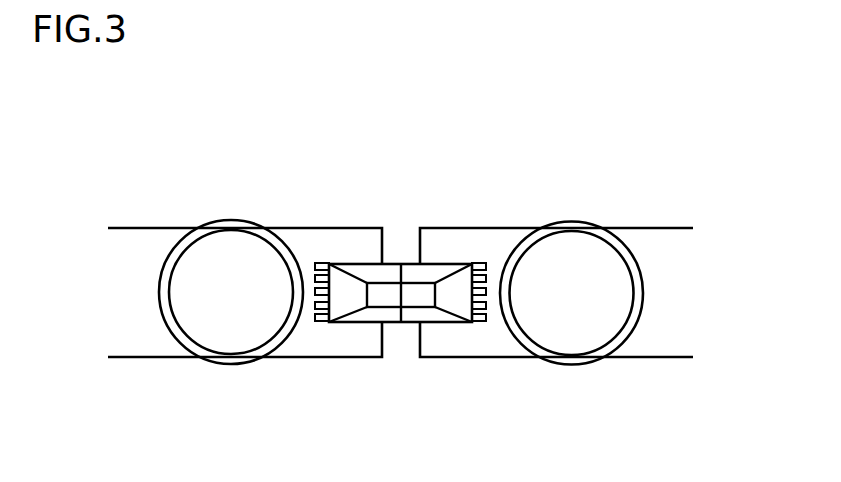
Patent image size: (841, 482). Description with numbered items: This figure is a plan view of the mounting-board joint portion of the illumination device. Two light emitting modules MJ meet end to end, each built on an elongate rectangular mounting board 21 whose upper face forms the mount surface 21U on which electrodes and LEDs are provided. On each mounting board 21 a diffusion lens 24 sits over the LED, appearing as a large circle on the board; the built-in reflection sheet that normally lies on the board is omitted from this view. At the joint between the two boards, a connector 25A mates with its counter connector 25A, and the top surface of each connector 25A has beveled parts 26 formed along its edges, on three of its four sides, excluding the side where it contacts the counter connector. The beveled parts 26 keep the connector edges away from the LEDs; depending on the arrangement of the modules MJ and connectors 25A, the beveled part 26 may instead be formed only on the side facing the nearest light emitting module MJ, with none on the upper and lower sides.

The mounting board 21 is at (146, 228).
The mount surface 21U is at (134, 330).
The diffusion lens 24 is at (229, 221).
The connector 25A is at (358, 264).
The beveled part 26 is at (340, 302).
The light emitting module MJ is at (271, 208).